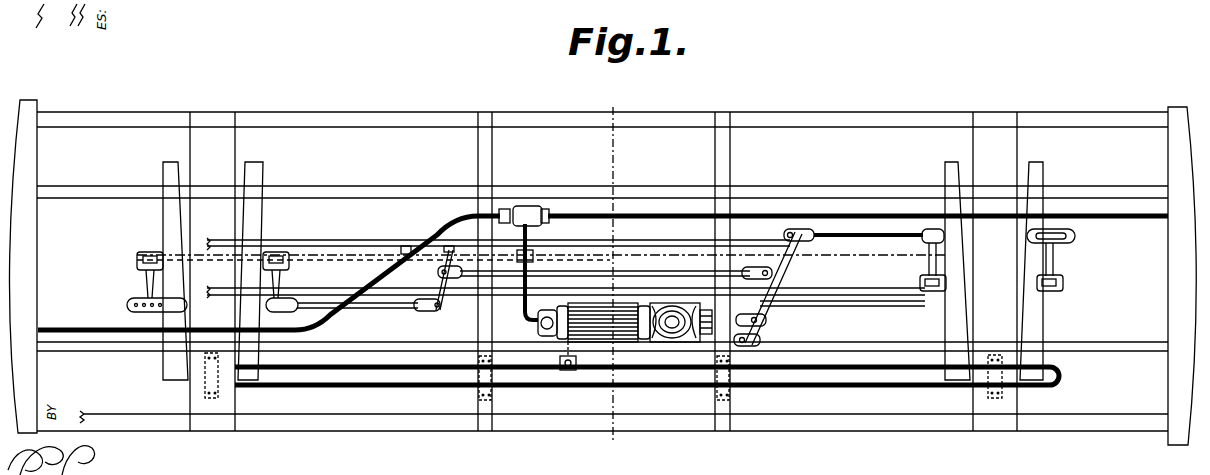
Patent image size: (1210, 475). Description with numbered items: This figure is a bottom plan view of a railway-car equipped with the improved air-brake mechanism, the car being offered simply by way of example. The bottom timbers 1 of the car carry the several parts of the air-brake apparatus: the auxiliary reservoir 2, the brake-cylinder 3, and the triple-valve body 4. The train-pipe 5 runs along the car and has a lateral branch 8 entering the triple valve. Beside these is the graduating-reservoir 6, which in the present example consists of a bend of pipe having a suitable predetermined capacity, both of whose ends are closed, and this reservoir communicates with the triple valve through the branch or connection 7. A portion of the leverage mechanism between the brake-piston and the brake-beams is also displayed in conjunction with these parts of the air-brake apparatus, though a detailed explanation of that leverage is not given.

The bottom timbers 1 is at (780, 432).
The auxiliary reservoir 2 is at (630, 345).
The brake-cylinder 3 is at (657, 345).
The triple-valve body 4 is at (537, 323).
The train-pipe 5 is at (749, 217).
The graduating-reservoir 6 is at (529, 388).
The branch or connection 7 is at (572, 372).
The lateral branch 8 is at (529, 236).